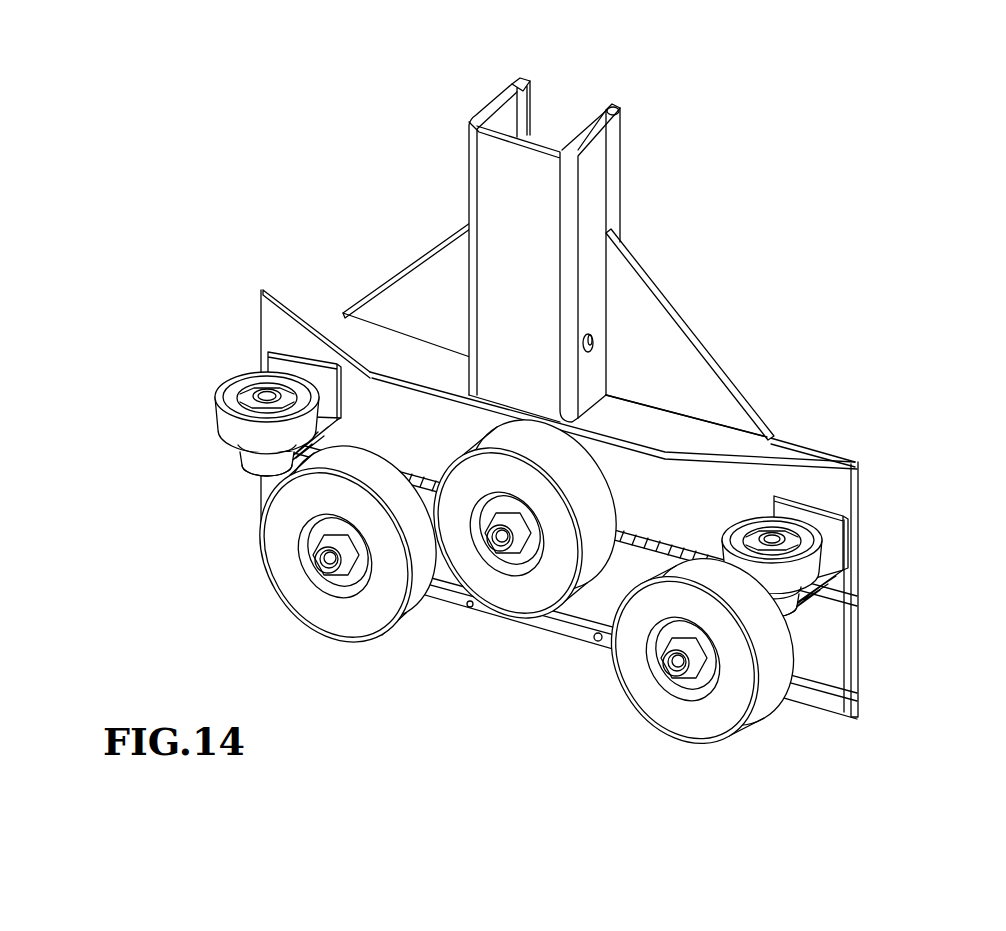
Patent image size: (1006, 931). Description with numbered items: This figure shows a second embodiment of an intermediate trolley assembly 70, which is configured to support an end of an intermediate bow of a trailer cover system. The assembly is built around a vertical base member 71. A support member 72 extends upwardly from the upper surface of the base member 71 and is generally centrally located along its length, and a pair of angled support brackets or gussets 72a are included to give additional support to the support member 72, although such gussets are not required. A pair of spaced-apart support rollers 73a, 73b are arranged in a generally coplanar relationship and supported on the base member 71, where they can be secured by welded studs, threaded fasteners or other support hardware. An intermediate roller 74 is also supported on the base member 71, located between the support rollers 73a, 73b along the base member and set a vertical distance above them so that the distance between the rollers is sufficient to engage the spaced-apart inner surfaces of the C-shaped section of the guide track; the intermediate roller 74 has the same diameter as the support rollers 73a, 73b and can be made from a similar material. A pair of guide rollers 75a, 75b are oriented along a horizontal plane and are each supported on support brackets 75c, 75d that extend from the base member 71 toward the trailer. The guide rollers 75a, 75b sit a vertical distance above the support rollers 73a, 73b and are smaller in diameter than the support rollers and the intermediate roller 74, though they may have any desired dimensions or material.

The intermediate trolley assembly 70 is at (770, 218).
The vertical base member 71 is at (328, 330).
The support member 72 is at (499, 169).
The angled support brackets or gussets 72a is at (440, 270).
The support roller 73a is at (667, 718).
The support roller 73b is at (320, 613).
The intermediate roller 74 is at (588, 498).
The guide roller 75a is at (797, 578).
The guide roller 75b is at (240, 428).
The support bracket 75c is at (838, 530).
The support bracket 75d is at (298, 368).